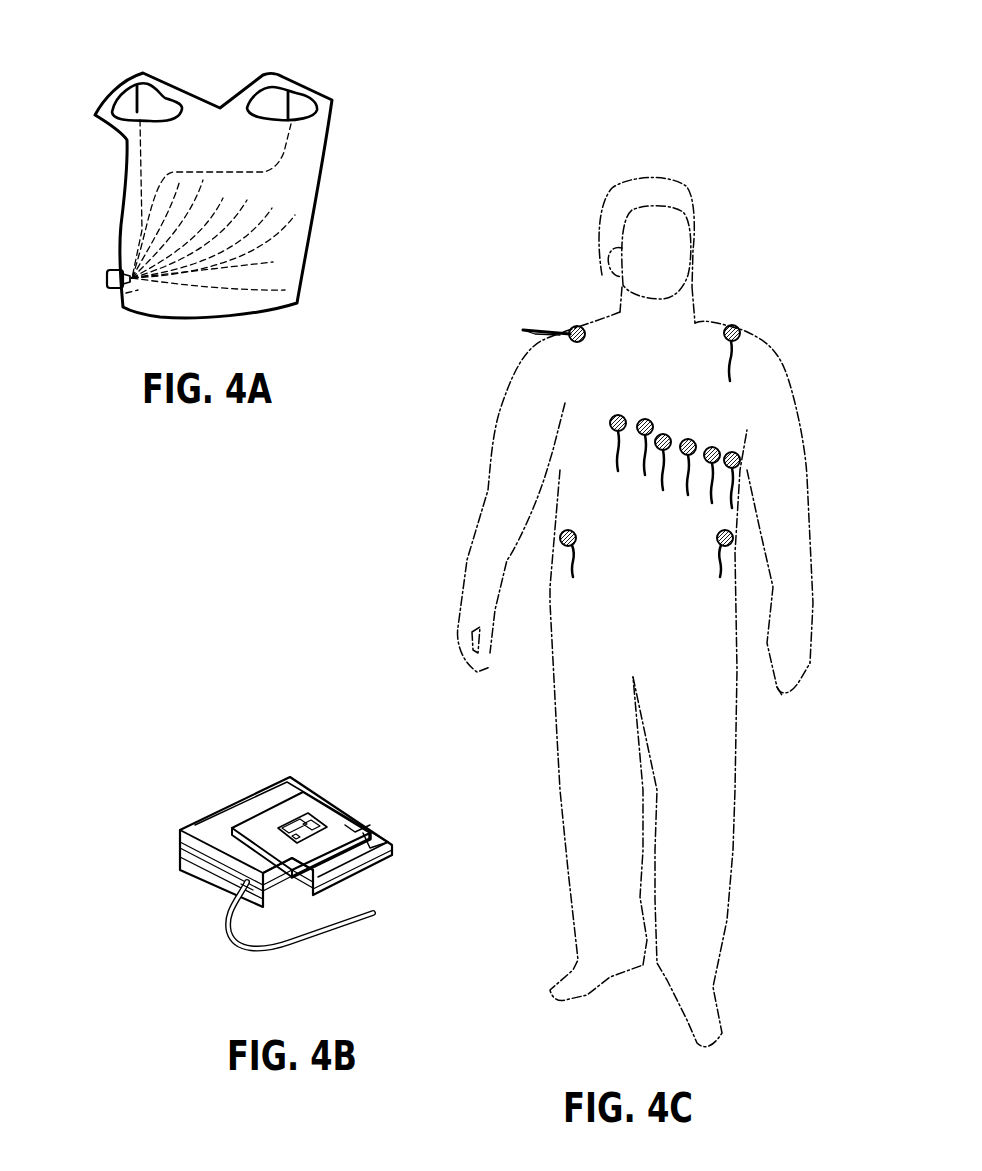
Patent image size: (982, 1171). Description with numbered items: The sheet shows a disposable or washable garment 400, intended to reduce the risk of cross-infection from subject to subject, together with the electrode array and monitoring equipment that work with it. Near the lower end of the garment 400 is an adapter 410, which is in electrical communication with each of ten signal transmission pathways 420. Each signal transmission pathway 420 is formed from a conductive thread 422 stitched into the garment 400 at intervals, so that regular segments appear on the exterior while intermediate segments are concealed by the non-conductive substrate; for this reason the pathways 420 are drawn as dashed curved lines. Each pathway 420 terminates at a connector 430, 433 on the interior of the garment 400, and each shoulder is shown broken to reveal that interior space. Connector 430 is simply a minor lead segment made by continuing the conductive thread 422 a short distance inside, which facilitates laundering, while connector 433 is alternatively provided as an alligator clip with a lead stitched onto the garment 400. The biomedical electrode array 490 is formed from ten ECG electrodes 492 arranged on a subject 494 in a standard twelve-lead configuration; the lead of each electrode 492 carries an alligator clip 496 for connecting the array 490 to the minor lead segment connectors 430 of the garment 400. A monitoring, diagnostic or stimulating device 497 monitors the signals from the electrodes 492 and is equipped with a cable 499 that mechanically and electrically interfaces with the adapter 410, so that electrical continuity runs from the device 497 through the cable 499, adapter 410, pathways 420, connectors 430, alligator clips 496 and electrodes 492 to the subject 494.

In FIG. 4A, the garment 400 is at (97, 97).
In FIG. 4A, the adapter 410 is at (117, 273).
In FIG. 4A, the signal transmission pathways 420 is at (290, 153).
In FIG. 4A, the conductive thread 422 is at (265, 262).
In FIG. 4A, the connector 430 is at (293, 108).
In FIG. 4A, the connector 433 is at (140, 108).
In FIG. 4C, the biomedical electrode array 490 is at (712, 389).
In FIG. 4C, the ECG electrode 492 is at (577, 327).
In FIG. 4C, the subject 494 is at (694, 322).
In FIG. 4C, the alligator clip 496 is at (527, 328).
In FIG. 4B, the monitoring, diagnostic or stimulating device 497 is at (340, 807).
In FIG. 4B, the cable 499 is at (330, 933).